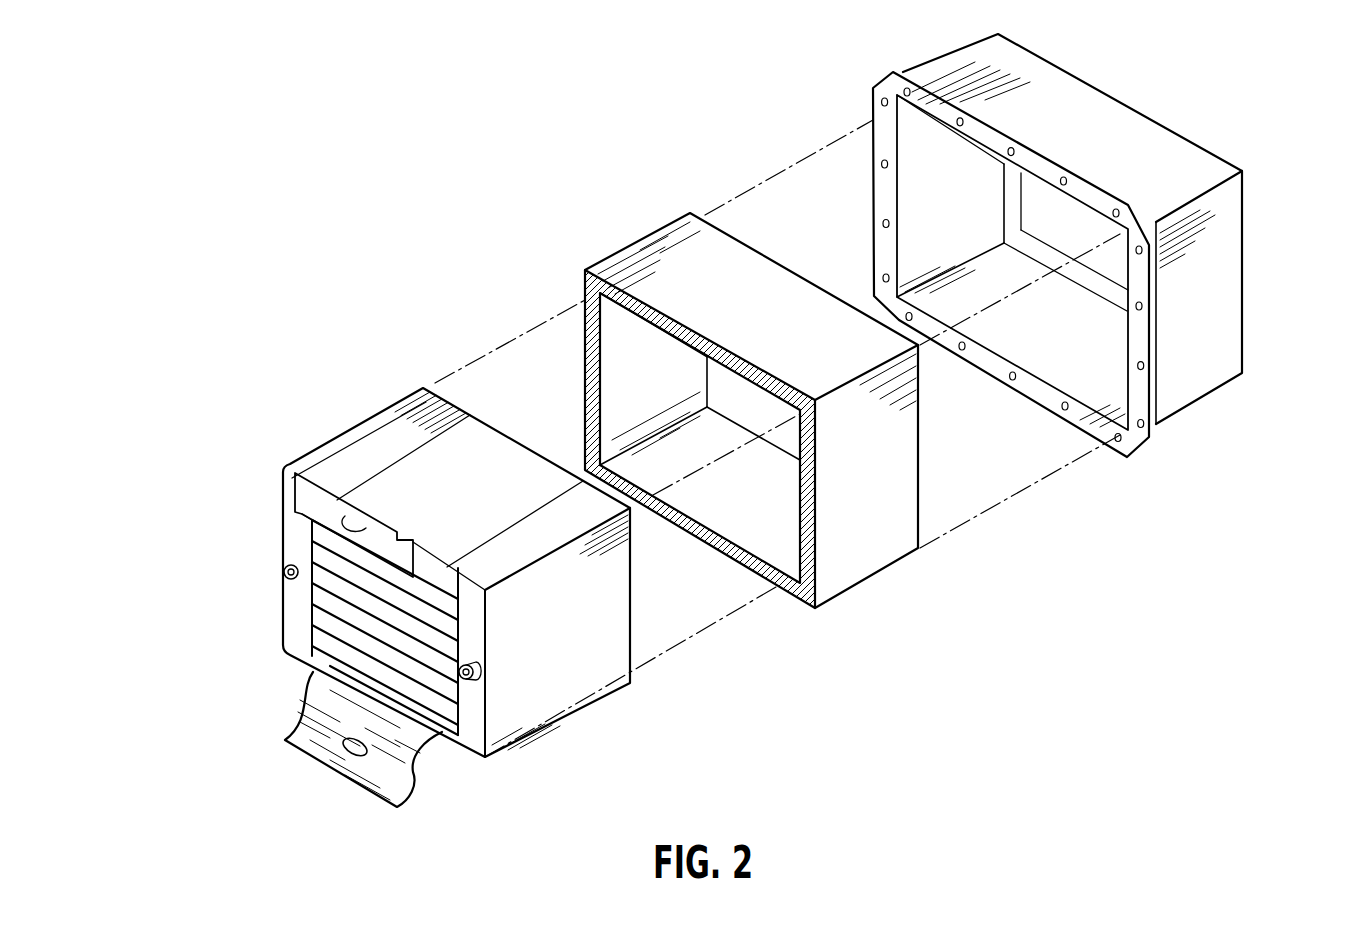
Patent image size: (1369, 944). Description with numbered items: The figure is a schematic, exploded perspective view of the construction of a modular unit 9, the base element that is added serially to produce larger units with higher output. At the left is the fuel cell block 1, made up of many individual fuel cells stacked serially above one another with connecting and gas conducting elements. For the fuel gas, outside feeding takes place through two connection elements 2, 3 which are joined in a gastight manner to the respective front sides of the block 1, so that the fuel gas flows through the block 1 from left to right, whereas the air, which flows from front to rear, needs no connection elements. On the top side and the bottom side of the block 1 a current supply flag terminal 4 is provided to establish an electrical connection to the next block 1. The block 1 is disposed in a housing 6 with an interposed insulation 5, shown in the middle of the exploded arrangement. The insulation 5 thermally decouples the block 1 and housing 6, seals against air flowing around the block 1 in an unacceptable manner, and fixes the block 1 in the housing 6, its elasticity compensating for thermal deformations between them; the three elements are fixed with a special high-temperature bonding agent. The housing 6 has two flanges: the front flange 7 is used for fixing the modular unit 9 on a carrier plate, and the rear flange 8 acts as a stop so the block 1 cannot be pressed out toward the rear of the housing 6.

The fuel cell block 1 is at (282, 390).
The connection element 2 is at (393, 437).
The connection element 3 is at (595, 675).
The current supply flag terminal 4 is at (293, 474).
The insulation 5 is at (868, 550).
The housing 6 is at (1260, 445).
The front flange 7 is at (872, 125).
The rear flange 8 is at (1020, 213).
The modular unit 9 is at (1045, 661).